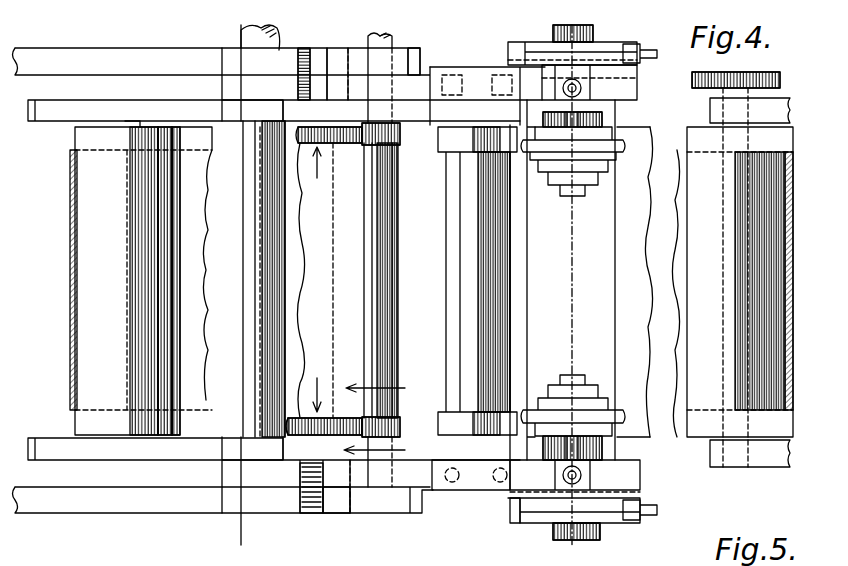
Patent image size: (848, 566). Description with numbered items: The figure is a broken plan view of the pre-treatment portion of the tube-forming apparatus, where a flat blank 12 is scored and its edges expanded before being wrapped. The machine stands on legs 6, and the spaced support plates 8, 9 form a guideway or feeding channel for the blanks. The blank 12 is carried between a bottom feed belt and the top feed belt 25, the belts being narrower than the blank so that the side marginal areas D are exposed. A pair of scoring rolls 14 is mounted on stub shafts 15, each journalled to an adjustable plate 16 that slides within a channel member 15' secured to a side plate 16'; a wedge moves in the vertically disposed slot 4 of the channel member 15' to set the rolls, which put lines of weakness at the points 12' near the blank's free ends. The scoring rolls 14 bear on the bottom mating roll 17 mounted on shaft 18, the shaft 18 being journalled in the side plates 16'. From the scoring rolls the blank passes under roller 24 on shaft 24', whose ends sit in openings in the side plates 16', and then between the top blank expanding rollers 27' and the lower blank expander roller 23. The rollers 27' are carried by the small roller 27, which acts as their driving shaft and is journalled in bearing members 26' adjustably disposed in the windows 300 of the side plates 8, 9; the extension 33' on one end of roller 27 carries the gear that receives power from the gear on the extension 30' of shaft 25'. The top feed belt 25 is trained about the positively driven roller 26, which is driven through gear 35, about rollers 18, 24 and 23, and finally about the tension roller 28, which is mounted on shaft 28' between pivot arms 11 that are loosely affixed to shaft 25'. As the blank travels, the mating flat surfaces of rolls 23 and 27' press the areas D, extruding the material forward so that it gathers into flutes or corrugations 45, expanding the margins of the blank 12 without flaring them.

The vertically disposed slot 4 is at (536, 506).
The legs 6 is at (374, 424).
The support plate 8 is at (340, 508).
The support plate 9 is at (190, 56).
The pivot arms 11 is at (108, 105).
The flat metal blank 12 is at (266, 279).
The score line points 12' is at (268, 413).
The scoring rolls 14 is at (618, 146).
The stub shafts 15 is at (583, 285).
The channel member 15' is at (635, 281).
The adjustable plate 16 is at (556, 277).
The side plate 16' is at (595, 277).
The bottom mating roll 17 is at (570, 275).
The shaft 18 is at (592, 34).
The lower blank expander roller 23 is at (342, 260).
The roller 24 is at (477, 281).
The shaft 24' is at (487, 277).
The top feed belt 25 is at (353, 269).
The shaft 25' is at (231, 279).
The positively driven roller 26 is at (736, 292).
The bearing members 26' is at (367, 276).
The roller 27 is at (398, 247).
The top blank expanding rollers 27' is at (392, 159).
The tension roller 28 is at (143, 281).
The shaft 28' is at (77, 342).
The shaft extension 30' is at (278, 29).
The shaft extension 33' is at (386, 28).
The driving gear 35 is at (768, 72).
The flutes or corrugations 45 is at (323, 432).
The windows 300 is at (430, 52).
The marginal areas D is at (309, 280).